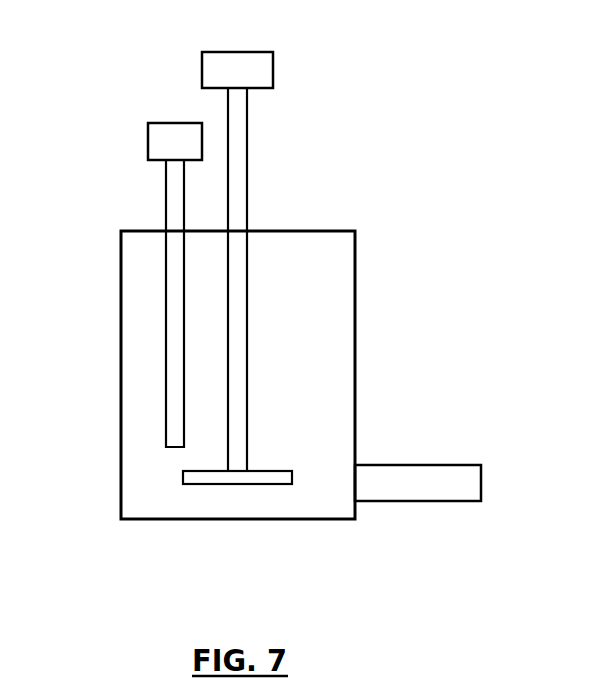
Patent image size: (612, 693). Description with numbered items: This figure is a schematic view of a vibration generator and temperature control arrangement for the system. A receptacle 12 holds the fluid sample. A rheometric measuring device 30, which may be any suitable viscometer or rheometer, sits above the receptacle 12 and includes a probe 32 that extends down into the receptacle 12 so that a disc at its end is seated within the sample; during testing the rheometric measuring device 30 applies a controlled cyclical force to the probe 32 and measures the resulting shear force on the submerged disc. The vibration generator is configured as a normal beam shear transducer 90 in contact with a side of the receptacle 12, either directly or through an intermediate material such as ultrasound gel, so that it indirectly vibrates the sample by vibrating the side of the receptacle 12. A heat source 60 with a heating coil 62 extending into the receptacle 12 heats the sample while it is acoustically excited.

The receptacle 12 is at (121, 374).
The rheometric measuring device 30 is at (274, 70).
The probe 32 is at (248, 159).
The heat source 60 is at (148, 134).
The heating coil 62 is at (166, 203).
The shear transducer 90 is at (427, 464).